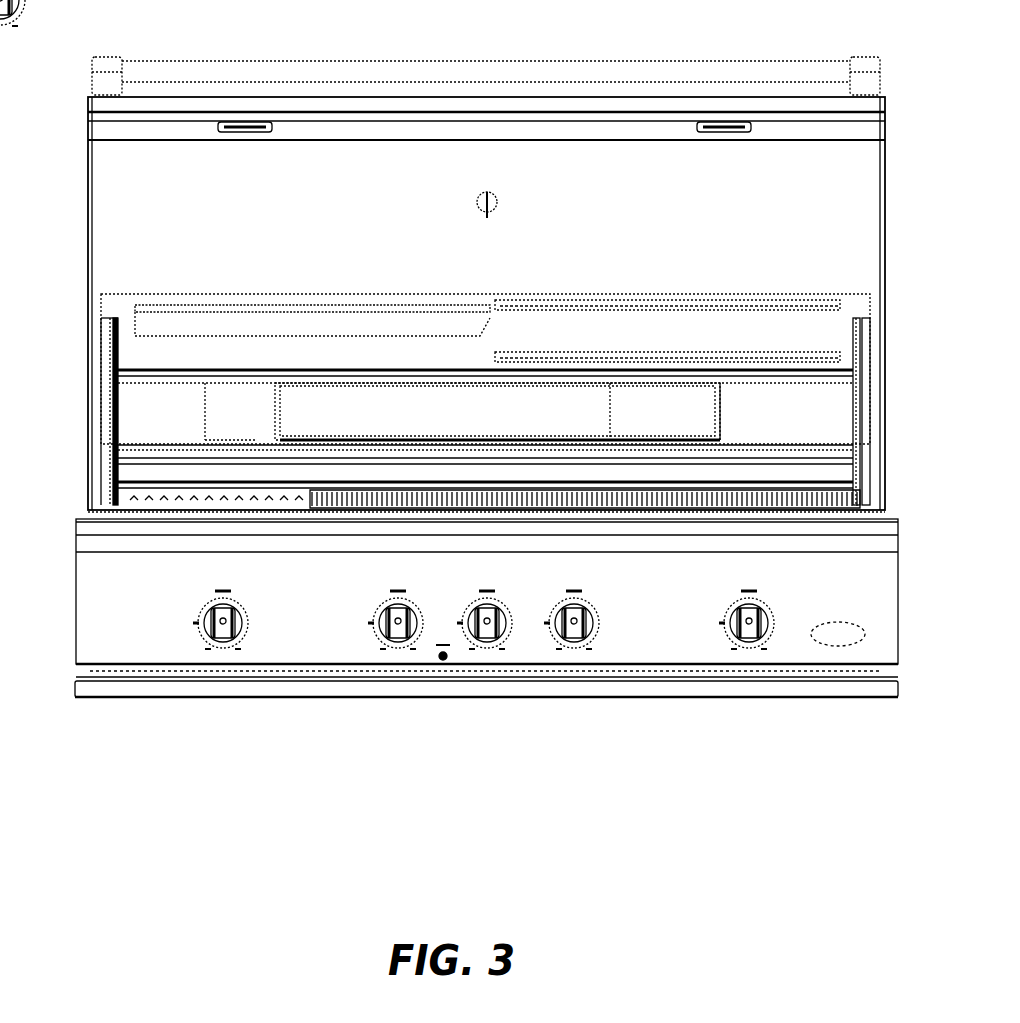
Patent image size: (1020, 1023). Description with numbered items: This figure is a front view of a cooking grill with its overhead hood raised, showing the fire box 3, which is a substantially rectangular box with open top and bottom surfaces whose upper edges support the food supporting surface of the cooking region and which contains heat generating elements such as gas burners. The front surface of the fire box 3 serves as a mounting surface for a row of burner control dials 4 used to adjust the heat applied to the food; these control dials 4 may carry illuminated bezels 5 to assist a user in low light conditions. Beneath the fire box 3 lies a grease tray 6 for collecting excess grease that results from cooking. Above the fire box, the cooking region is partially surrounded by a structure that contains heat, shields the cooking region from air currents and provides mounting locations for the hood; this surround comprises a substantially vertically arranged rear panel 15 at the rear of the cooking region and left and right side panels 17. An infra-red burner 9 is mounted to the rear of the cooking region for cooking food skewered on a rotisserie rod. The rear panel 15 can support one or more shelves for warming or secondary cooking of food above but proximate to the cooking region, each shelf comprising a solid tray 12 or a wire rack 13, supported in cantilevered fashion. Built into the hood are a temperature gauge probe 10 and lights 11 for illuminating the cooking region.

The fire box 3 is at (74, 562).
The burner control dials 4 is at (228, 624).
The illuminated bezels 5 is at (195, 612).
The grease tray 6 is at (172, 690).
The infra-red burner 9 is at (292, 415).
The temperature gauge probe 10 is at (487, 192).
The lights 11 is at (256, 125).
The solid tray 12 is at (116, 312).
The wire rack 13 is at (758, 356).
The rear panel 15 is at (485, 354).
The side panels 17 is at (101, 358).